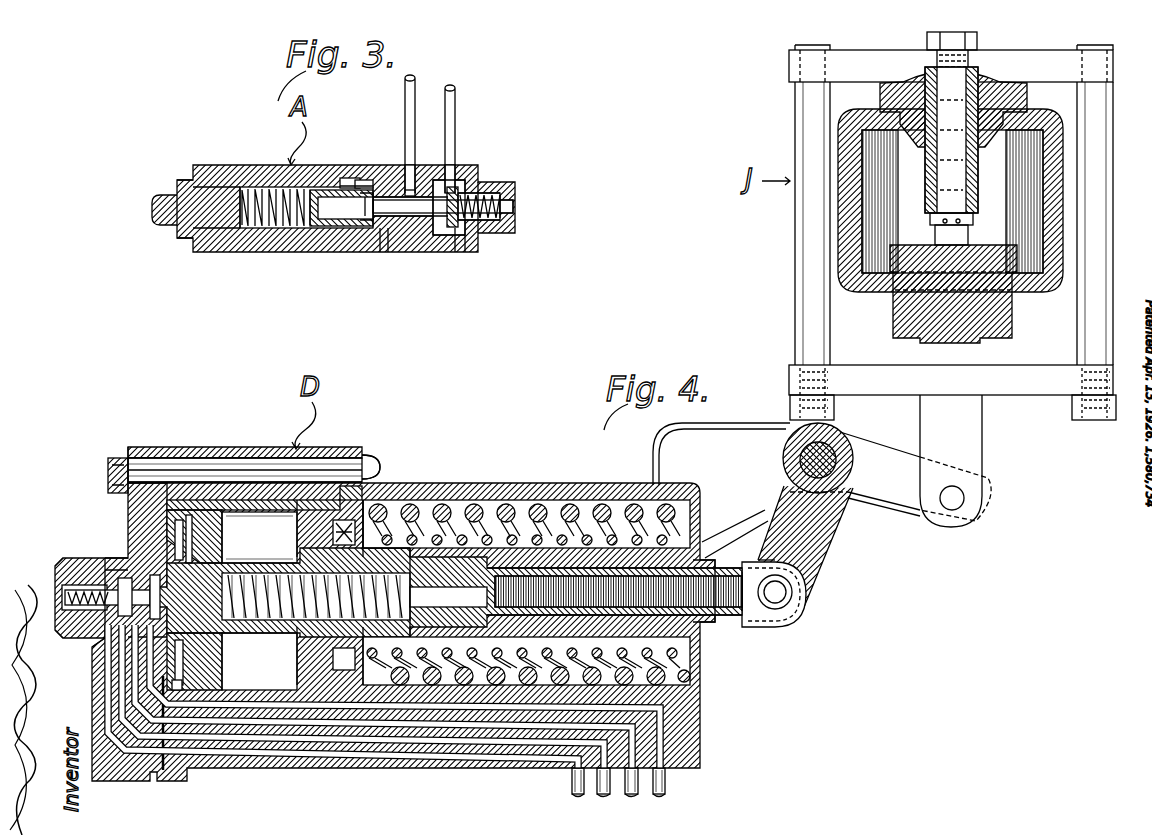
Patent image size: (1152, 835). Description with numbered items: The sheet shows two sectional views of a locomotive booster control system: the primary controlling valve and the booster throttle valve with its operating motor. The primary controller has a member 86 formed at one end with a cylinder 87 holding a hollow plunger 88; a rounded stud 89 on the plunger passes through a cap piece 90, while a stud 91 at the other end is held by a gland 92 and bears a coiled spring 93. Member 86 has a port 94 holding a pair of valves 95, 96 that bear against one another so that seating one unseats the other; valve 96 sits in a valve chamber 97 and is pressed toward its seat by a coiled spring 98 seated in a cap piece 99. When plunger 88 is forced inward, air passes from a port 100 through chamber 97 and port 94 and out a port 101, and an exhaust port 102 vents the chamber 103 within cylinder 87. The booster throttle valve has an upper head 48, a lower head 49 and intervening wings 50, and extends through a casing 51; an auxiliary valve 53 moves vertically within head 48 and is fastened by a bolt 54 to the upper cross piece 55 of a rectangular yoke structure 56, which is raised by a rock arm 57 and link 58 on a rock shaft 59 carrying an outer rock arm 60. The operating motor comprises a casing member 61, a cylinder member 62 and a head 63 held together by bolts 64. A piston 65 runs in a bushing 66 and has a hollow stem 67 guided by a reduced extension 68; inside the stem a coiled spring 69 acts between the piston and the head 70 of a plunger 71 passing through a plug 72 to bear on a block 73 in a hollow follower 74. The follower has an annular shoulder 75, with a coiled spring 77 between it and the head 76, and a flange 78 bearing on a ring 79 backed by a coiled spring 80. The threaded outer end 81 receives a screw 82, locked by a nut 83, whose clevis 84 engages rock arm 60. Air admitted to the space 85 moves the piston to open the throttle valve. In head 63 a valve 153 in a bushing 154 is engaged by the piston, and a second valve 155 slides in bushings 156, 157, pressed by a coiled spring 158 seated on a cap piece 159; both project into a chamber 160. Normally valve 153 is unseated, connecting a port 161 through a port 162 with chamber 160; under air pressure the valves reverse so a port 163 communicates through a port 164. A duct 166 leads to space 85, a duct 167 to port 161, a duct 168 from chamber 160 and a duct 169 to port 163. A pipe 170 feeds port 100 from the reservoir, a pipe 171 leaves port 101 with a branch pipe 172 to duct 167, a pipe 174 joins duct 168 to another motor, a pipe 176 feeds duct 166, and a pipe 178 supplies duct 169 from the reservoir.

In FIG. 4, the upper head 48 is at (908, 90).
In FIG. 4, the lower head 49 is at (892, 313).
In FIG. 4, the wings 50 is at (897, 202).
In FIG. 4, the casing 51 is at (840, 230).
In FIG. 4, the auxiliary valve 53 is at (975, 85).
In FIG. 4, the bolt 54 is at (969, 36).
In FIG. 4, the upper cross piece 55 is at (790, 70).
In FIG. 4, the yoke structure 56 is at (790, 381).
In FIG. 4, the rock arm 57 is at (866, 458).
In FIG. 4, the link 58 is at (984, 440).
In FIG. 4, the rock shaft 59 is at (852, 500).
In FIG. 4, the rock arm 60 is at (806, 528).
In FIG. 4, the casing member 61 is at (516, 498).
In FIG. 4, the cylinder member 62 is at (238, 495).
In FIG. 4, the head 63 is at (131, 450).
In FIG. 4, the bolts 64 is at (118, 463).
In FIG. 4, the piston 65 is at (260, 505).
In FIG. 4, the bushing 66 is at (282, 480).
In FIG. 4, the hollow stem 67 is at (282, 620).
In FIG. 4, the extension 68 is at (362, 553).
In FIG. 4, the coiled spring 69 is at (259, 661).
In FIG. 4, the head 70 is at (370, 548).
In FIG. 4, the plunger 71 is at (468, 558).
In FIG. 4, the plug 72 is at (440, 500).
In FIG. 4, the block 73 is at (580, 570).
In FIG. 4, the follower 74 is at (560, 500).
In FIG. 4, the annular shoulder 75 is at (412, 690).
In FIG. 4, the head 76 is at (694, 660).
In FIG. 4, the coiled spring 77 is at (692, 650).
In FIG. 4, the flange 78 is at (345, 500).
In FIG. 4, the ring 79 is at (380, 462).
In FIG. 4, the coiled spring 80 is at (696, 681).
In FIG. 4, the outer end 81 is at (652, 482).
In FIG. 4, the screw 82 is at (780, 612).
In FIG. 4, the nut 83 is at (726, 622).
In FIG. 4, the clevis 84 is at (805, 604).
In FIG. 4, the space 85 is at (178, 686).
In FIG. 3, the member 86 is at (385, 235).
In FIG. 3, the cylinder 87 is at (270, 229).
In FIG. 3, the hollow plunger 88 is at (302, 230).
In FIG. 3, the stud 89 is at (162, 226).
In FIG. 3, the cap piece 90 is at (192, 240).
In FIG. 3, the stud 91 is at (363, 215).
In FIG. 3, the gland 92 is at (348, 178).
In FIG. 3, the coiled spring 93 is at (243, 252).
In FIG. 3, the port 94 is at (408, 232).
In FIG. 3, the valve 95 is at (380, 238).
In FIG. 3, the valve 96 is at (445, 197).
In FIG. 3, the valve chamber 97 is at (456, 236).
In FIG. 3, the coiled spring 98 is at (517, 195).
In FIG. 3, the cap piece 99 is at (517, 212).
In FIG. 3, the port 100 is at (482, 170).
In FIG. 3, the port 101 is at (368, 181).
In FIG. 3, the exhaust port 102 is at (375, 230).
In FIG. 3, the chamber 103 is at (356, 182).
In FIG. 4, the valve 153 is at (112, 668).
In FIG. 4, the bushing 154 is at (140, 446).
In FIG. 4, the valve 155 is at (104, 562).
In FIG. 4, the bushing 156 is at (128, 560).
In FIG. 4, the bushing 157 is at (66, 584).
In FIG. 4, the coiled spring 158 is at (120, 618).
In FIG. 4, the cap piece 159 is at (62, 597).
In FIG. 4, the chamber 160 is at (173, 515).
In FIG. 4, the port 161 is at (226, 475).
In FIG. 4, the port 162 is at (224, 560).
In FIG. 4, the port 163 is at (176, 540).
In FIG. 4, the port 164 is at (118, 478).
In FIG. 4, the duct 166 is at (458, 712).
In FIG. 4, the duct 167 is at (478, 730).
In FIG. 4, the duct 168 is at (506, 746).
In FIG. 4, the duct 169 is at (540, 762).
In FIG. 3, the pipe 170 is at (456, 92).
In FIG. 3, the pipe 171 is at (411, 78).
In FIG. 4, the branch pipe 172 is at (640, 791).
In FIG. 4, the pipe 174 is at (630, 798).
In FIG. 4, the pipe 176 is at (666, 776).
In FIG. 4, the pipe 178 is at (578, 795).